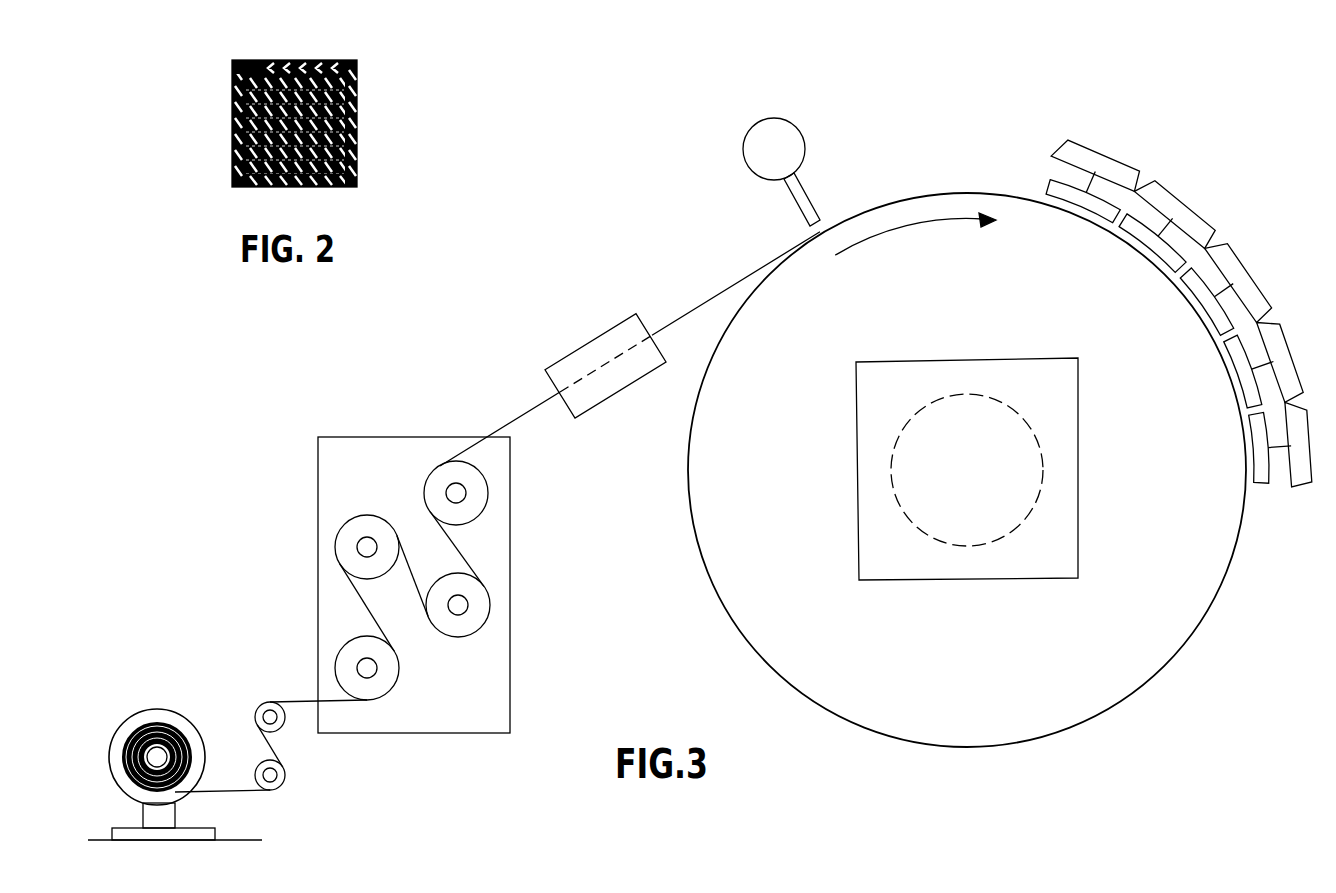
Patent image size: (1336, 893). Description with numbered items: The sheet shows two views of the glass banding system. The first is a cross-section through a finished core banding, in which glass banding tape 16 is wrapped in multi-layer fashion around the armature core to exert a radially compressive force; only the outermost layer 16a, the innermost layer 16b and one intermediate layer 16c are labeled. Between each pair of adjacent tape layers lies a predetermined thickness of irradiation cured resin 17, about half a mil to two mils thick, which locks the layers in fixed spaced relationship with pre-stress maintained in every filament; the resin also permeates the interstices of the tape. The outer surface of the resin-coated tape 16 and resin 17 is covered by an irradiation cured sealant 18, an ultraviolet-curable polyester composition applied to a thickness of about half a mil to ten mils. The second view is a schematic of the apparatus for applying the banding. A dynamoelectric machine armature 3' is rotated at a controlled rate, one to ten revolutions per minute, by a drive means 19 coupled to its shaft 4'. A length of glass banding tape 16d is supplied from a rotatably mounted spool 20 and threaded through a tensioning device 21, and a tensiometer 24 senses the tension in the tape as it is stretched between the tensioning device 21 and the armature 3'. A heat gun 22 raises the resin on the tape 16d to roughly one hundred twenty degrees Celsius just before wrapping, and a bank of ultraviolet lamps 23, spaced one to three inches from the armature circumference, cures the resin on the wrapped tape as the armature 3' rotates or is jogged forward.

In FIG. 2, the glass banding tape 16 is at (321, 98).
In FIG. 2, the outermost layer of banding tape 16a is at (292, 60).
In FIG. 2, the innermost layer of banding tape 16b is at (240, 186).
In FIG. 2, the intermediate layer of banding tape 16c is at (235, 127).
In FIG. 2, the irradiation cured resin 17 is at (357, 118).
In FIG. 2, the irradiation cured sealant 18 is at (232, 65).
In FIG. 3, the dynamoelectric machine armature 3' is at (967, 470).
In FIG. 3, the armature shaft 4' is at (967, 434).
In FIG. 3, the drive means 19 is at (1078, 361).
In FIG. 3, the spool 20 is at (158, 706).
In FIG. 3, the tensioning device 21 is at (318, 458).
In FIG. 3, the glass banding tape 16d is at (722, 298).
In FIG. 3, the tensiometer 24 is at (610, 332).
In FIG. 3, the heat gun 22 is at (812, 153).
In FIG. 3, the bank of ultraviolet lamps 23 is at (1188, 197).